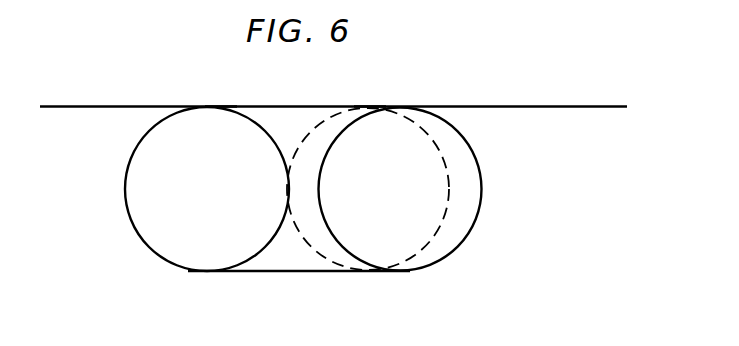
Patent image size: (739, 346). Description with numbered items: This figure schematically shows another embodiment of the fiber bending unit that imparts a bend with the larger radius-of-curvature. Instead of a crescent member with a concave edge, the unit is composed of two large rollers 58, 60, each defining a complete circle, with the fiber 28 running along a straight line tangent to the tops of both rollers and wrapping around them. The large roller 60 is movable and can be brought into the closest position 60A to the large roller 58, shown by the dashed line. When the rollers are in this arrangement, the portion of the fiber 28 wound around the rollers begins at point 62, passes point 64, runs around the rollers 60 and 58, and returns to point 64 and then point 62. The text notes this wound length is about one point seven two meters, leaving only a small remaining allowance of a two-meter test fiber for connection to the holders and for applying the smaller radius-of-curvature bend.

The fiber 28 is at (512, 104).
The large roller 58 is at (156, 229).
The large roller 60 is at (467, 168).
The closest position 60A is at (307, 244).
The point 62 is at (221, 125).
The point 64 is at (370, 105).